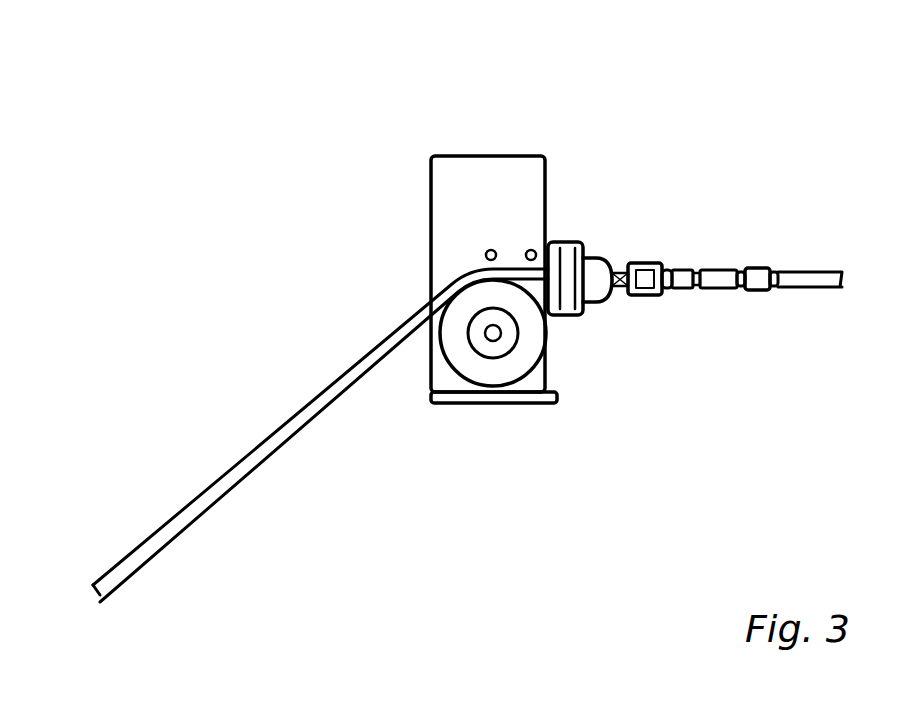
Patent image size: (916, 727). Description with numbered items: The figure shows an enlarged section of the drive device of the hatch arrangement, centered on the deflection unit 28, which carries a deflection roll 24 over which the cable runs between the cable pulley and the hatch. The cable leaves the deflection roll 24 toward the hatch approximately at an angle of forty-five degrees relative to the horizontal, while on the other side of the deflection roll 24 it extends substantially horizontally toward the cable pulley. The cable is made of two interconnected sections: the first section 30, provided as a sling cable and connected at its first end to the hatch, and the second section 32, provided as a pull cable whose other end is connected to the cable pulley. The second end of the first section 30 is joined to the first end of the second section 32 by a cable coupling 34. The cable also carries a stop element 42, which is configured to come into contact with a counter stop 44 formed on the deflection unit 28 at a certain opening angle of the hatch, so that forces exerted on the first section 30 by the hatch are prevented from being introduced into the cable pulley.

The deflection roll 24 is at (525, 355).
The deflection unit 28 is at (521, 148).
The first section 30 is at (272, 447).
The second section 32 is at (818, 272).
The cable coupling 34 is at (716, 266).
The stop element 42 is at (639, 262).
The counter stop 44 is at (572, 238).